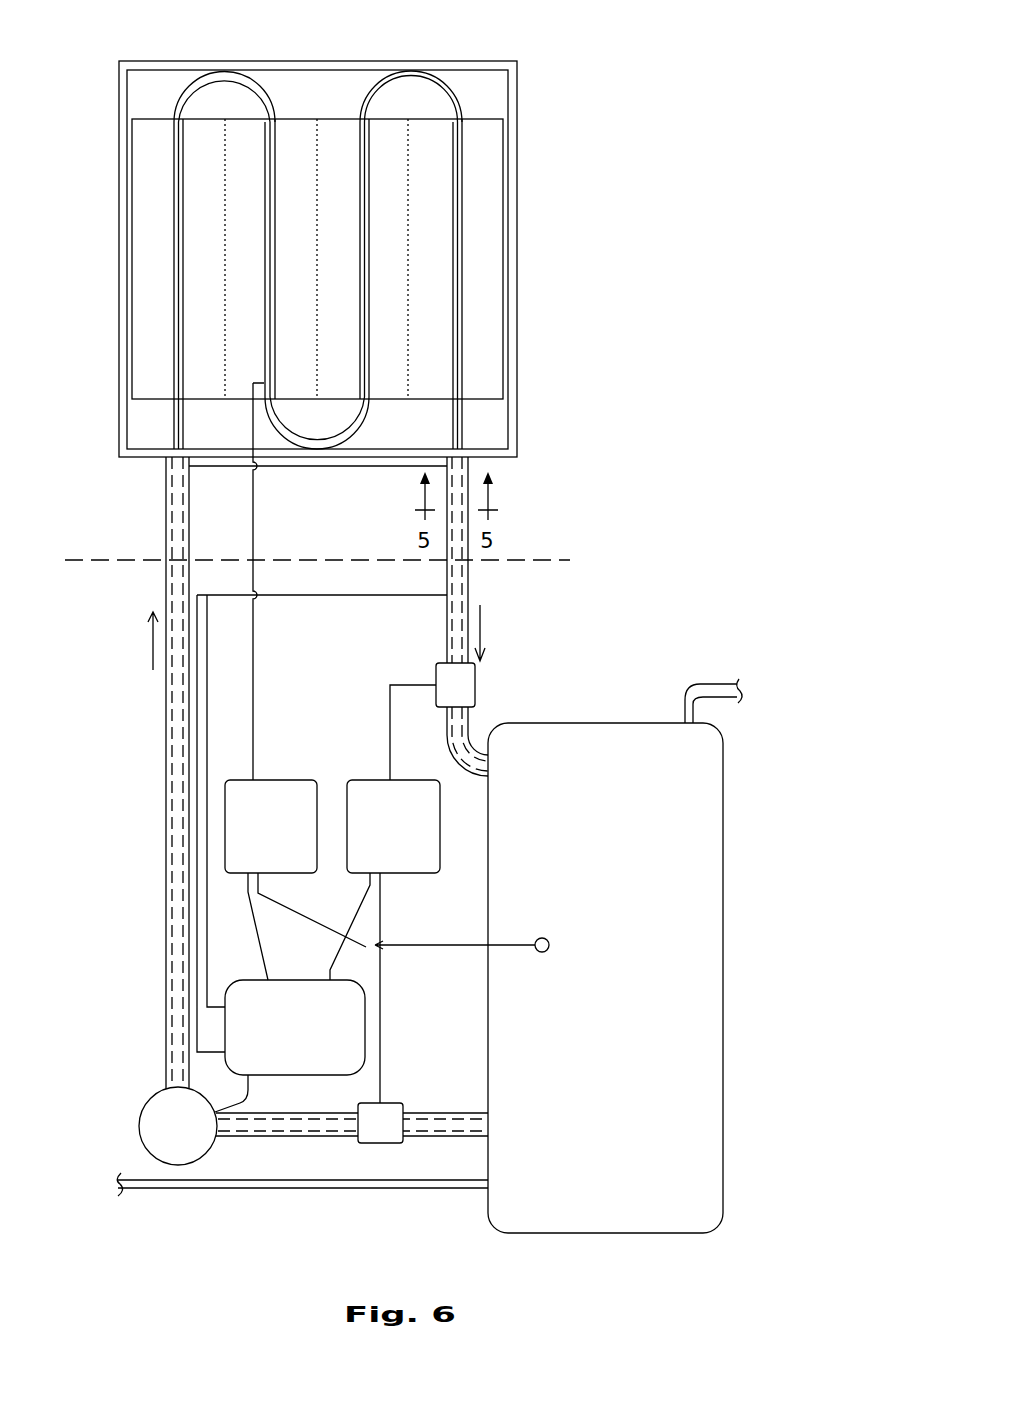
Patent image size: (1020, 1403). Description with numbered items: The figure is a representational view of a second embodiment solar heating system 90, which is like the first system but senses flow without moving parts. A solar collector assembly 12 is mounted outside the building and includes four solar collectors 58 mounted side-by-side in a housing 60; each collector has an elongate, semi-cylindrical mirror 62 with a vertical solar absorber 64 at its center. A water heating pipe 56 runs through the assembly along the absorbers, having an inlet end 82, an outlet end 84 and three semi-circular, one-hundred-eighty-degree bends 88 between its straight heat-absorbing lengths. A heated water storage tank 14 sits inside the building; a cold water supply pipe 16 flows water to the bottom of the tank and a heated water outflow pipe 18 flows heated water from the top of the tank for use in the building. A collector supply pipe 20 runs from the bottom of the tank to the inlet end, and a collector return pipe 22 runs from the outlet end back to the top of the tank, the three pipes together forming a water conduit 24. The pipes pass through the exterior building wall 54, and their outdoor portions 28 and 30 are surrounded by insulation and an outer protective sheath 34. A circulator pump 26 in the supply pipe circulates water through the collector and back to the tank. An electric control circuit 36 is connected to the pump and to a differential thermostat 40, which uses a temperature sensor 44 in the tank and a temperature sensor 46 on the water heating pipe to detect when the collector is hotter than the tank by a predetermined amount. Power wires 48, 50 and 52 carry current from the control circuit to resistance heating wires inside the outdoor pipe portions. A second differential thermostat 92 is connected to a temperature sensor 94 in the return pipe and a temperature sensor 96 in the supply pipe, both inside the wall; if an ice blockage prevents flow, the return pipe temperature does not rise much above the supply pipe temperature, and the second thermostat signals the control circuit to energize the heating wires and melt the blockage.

The solar collector assembly 12 is at (528, 130).
The heated water storage tank 14 is at (736, 820).
The cold water supply pipe 16 is at (240, 1190).
The heated water outflow pipe 18 is at (690, 683).
The collector supply pipe 20 is at (160, 760).
The collector return pipe 22 is at (467, 593).
The water conduit 24 is at (160, 574).
The circulator pump 26 is at (167, 1091).
The outdoor portion of supply pipe 28 is at (186, 515).
The outdoor portion of return pipe 30 is at (447, 525).
The outer protective sheath 34 is at (166, 533).
The electric control circuit 36 is at (279, 1040).
The differential thermostat 40 is at (259, 840).
The temperature sensor 44 is at (549, 940).
The temperature sensor 46 is at (262, 376).
The power wire 48 is at (208, 718).
The power wire 50 is at (303, 467).
The power wire 52 is at (208, 632).
The exterior building wall 54 is at (513, 558).
The water heating pipe 56 is at (371, 433).
The solar collector 58 is at (148, 106).
The housing 60 is at (517, 212).
The semi-cylindrical mirror 62 is at (194, 252).
The vertical solar absorber 64 is at (183, 200).
The inlet end 82 is at (177, 414).
The outlet end 84 is at (460, 414).
The semi-circular bend 88 is at (192, 93).
The second embodiment solar heating system 90 is at (628, 100).
The second differential thermostat 92 is at (381, 840).
The temperature sensor 94 is at (476, 686).
The temperature sensor 96 is at (401, 1104).